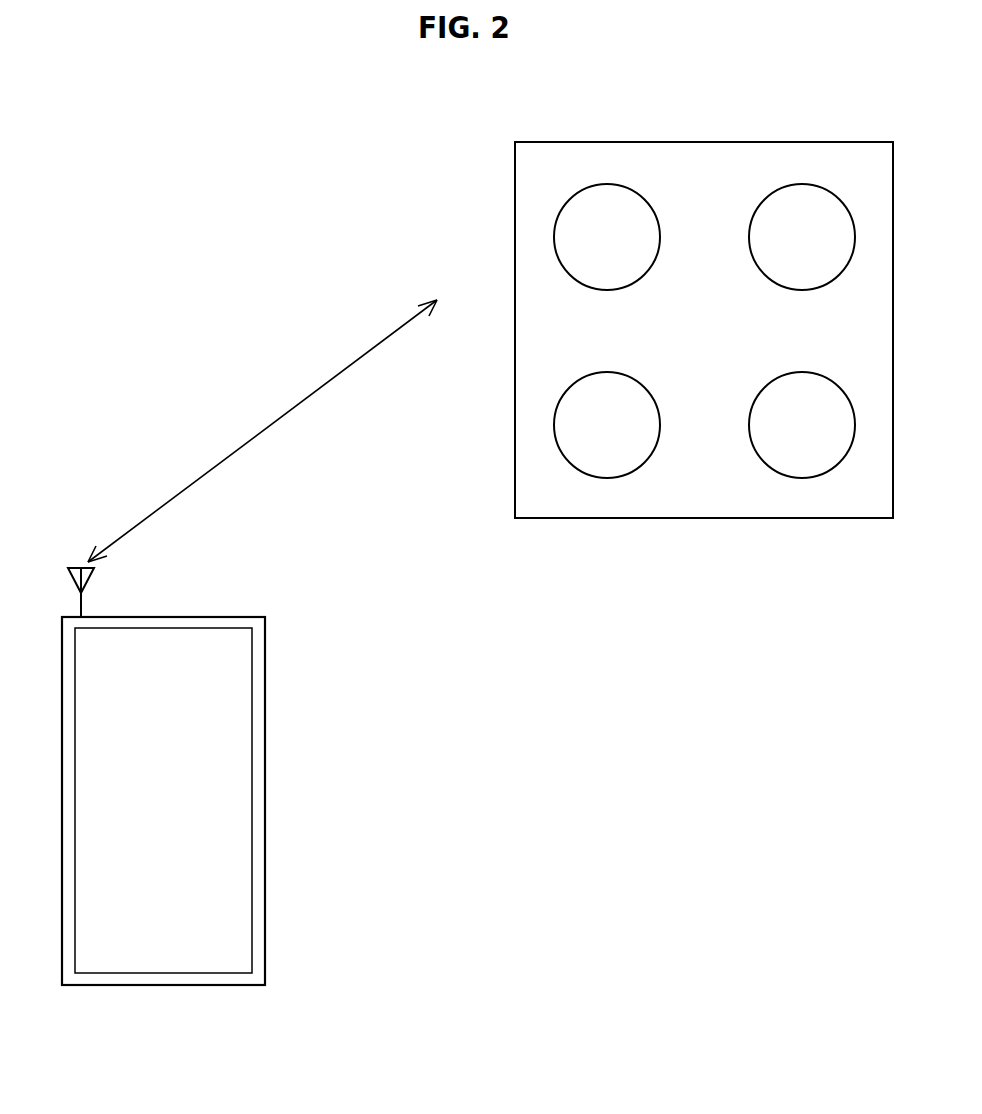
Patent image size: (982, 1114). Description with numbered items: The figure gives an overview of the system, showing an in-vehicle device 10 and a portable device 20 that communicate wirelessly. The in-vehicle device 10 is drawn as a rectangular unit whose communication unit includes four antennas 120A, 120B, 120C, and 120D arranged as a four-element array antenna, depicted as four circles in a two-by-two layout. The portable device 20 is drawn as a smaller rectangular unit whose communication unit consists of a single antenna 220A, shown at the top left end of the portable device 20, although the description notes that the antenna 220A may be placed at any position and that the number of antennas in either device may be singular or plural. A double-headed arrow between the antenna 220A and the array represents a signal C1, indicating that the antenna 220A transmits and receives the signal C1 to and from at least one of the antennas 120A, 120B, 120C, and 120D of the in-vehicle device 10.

The in-vehicle device 10 is at (858, 142).
The antenna 120A is at (661, 182).
The antenna 120B is at (856, 182).
The antenna 120C is at (661, 369).
The antenna 120D is at (856, 369).
The portable device 20 is at (163, 988).
The antenna 220A is at (75, 566).
The signal C1 is at (258, 430).